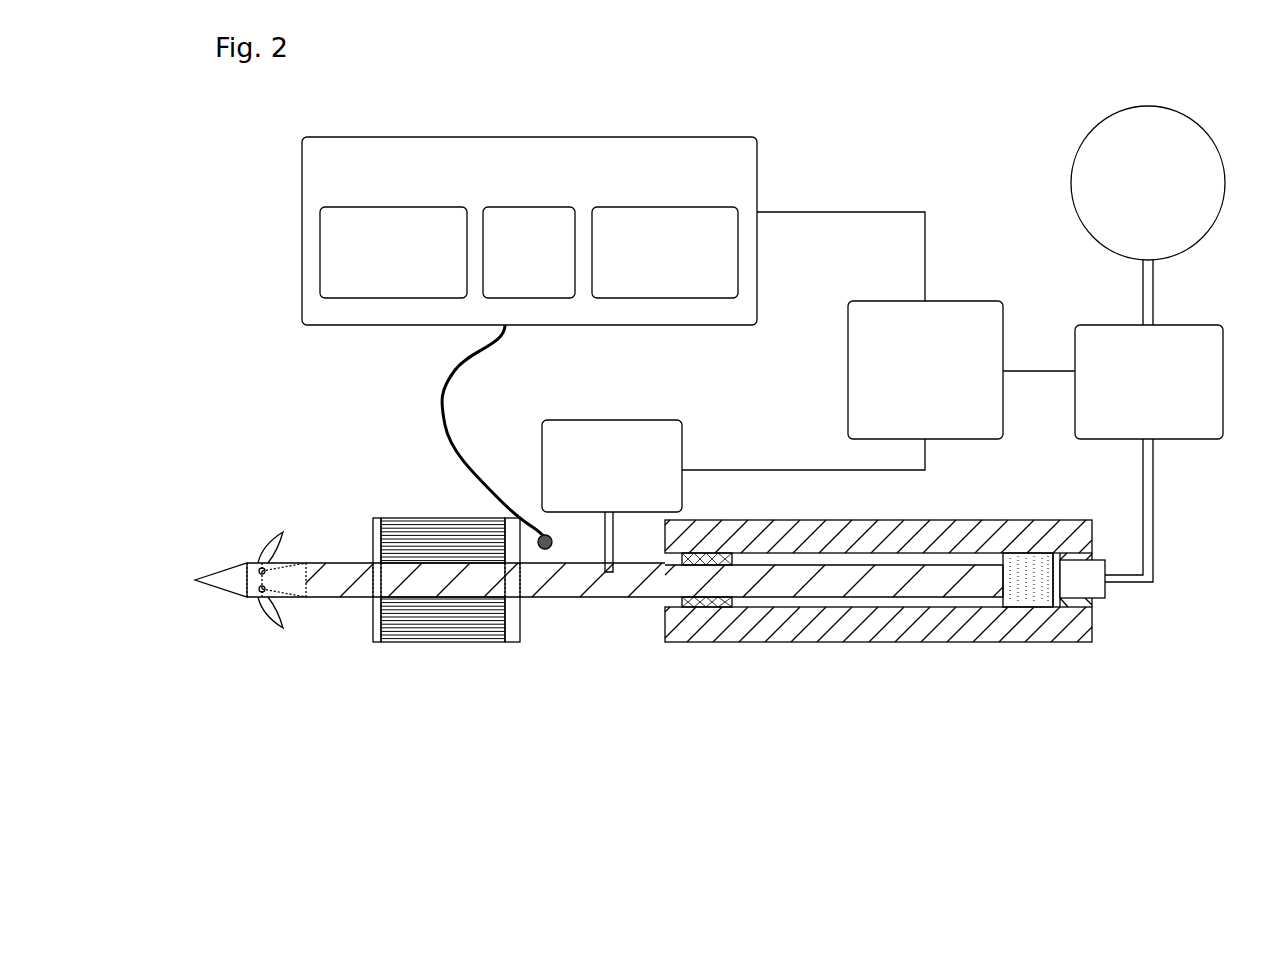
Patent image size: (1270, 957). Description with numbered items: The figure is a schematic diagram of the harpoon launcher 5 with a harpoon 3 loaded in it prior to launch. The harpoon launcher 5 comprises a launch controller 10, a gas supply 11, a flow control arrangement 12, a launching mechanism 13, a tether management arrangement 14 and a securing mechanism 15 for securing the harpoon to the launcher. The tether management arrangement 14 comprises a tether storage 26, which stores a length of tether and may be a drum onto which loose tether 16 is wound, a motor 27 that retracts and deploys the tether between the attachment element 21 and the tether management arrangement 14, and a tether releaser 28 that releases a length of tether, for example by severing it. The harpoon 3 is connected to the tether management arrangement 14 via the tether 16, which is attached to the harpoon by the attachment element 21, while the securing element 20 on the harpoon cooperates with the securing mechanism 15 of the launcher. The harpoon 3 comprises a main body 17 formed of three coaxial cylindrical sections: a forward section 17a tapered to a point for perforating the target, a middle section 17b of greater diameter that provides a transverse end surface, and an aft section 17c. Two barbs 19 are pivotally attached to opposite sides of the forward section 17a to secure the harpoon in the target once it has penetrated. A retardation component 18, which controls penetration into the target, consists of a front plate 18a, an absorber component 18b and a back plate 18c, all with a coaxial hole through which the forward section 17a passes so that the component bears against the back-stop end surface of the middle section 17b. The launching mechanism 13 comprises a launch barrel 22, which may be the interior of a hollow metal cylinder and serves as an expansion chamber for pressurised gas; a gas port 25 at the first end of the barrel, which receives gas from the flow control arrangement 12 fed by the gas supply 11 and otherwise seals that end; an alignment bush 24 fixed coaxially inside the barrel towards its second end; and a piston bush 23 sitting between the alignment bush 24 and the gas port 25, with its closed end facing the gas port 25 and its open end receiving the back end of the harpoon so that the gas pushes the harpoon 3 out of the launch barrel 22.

The harpoon launcher 5 is at (918, 114).
The tether management arrangement 14 is at (529, 231).
The tether storage 26 is at (393, 252).
The motor 27 is at (529, 252).
The tether releaser 28 is at (665, 252).
The gas supply 11 is at (1148, 183).
The launch controller 10 is at (925, 370).
The flow control arrangement 12 is at (1149, 382).
The securing mechanism 15 is at (612, 466).
The securing element 20 is at (616, 563).
The tether 16 is at (445, 412).
The attachment element 21 is at (552, 538).
The harpoon 3 is at (693, 769).
The main body 17 is at (632, 745).
The forward section 17a is at (338, 578).
The middle section 17b is at (567, 593).
The aft section 17c is at (722, 573).
The barbs 19 is at (268, 607).
The retardation component 18 is at (396, 452).
The front plate 18a is at (373, 547).
The absorber component 18b is at (430, 538).
The back plate 18c is at (515, 545).
The launching mechanism 13 is at (897, 686).
The launch barrel 22 is at (845, 600).
The alignment bush 24 is at (712, 603).
The piston bush 23 is at (1043, 600).
The gas port 25 is at (1093, 600).